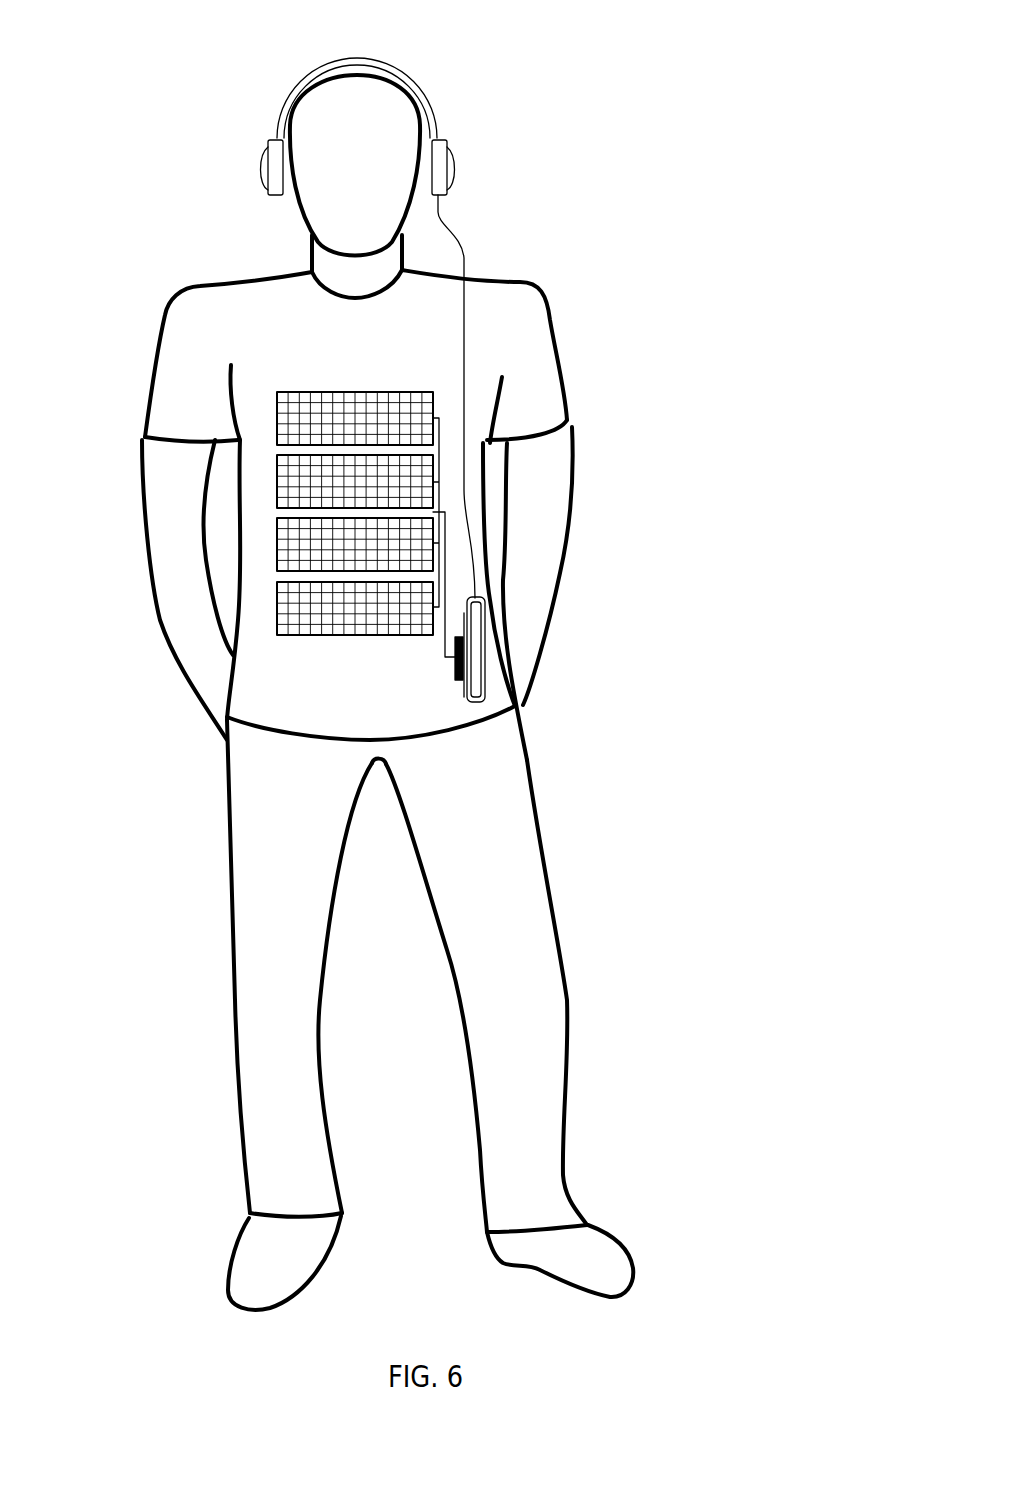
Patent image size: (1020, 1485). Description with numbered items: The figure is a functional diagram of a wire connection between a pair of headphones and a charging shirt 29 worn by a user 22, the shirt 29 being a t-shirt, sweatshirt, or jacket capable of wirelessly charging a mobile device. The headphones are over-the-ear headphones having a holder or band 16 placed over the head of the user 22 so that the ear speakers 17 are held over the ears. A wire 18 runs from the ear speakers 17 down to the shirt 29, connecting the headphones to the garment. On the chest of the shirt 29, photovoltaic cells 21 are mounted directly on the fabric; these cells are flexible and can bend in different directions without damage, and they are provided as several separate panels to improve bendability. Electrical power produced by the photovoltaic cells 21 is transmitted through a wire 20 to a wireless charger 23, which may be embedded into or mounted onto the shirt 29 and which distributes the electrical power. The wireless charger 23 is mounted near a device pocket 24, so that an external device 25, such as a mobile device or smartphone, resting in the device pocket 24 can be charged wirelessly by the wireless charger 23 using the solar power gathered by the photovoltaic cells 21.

The holder or band 16 is at (423, 85).
The ear speakers 17 is at (450, 135).
The wire 18 is at (465, 250).
The shirt 29 is at (252, 327).
The user 22 is at (538, 452).
The photovoltaic cells 21 is at (323, 607).
The wire 20 is at (447, 638).
The wireless charger 23 is at (452, 675).
The external device 25 is at (478, 605).
The device pocket 24 is at (487, 673).